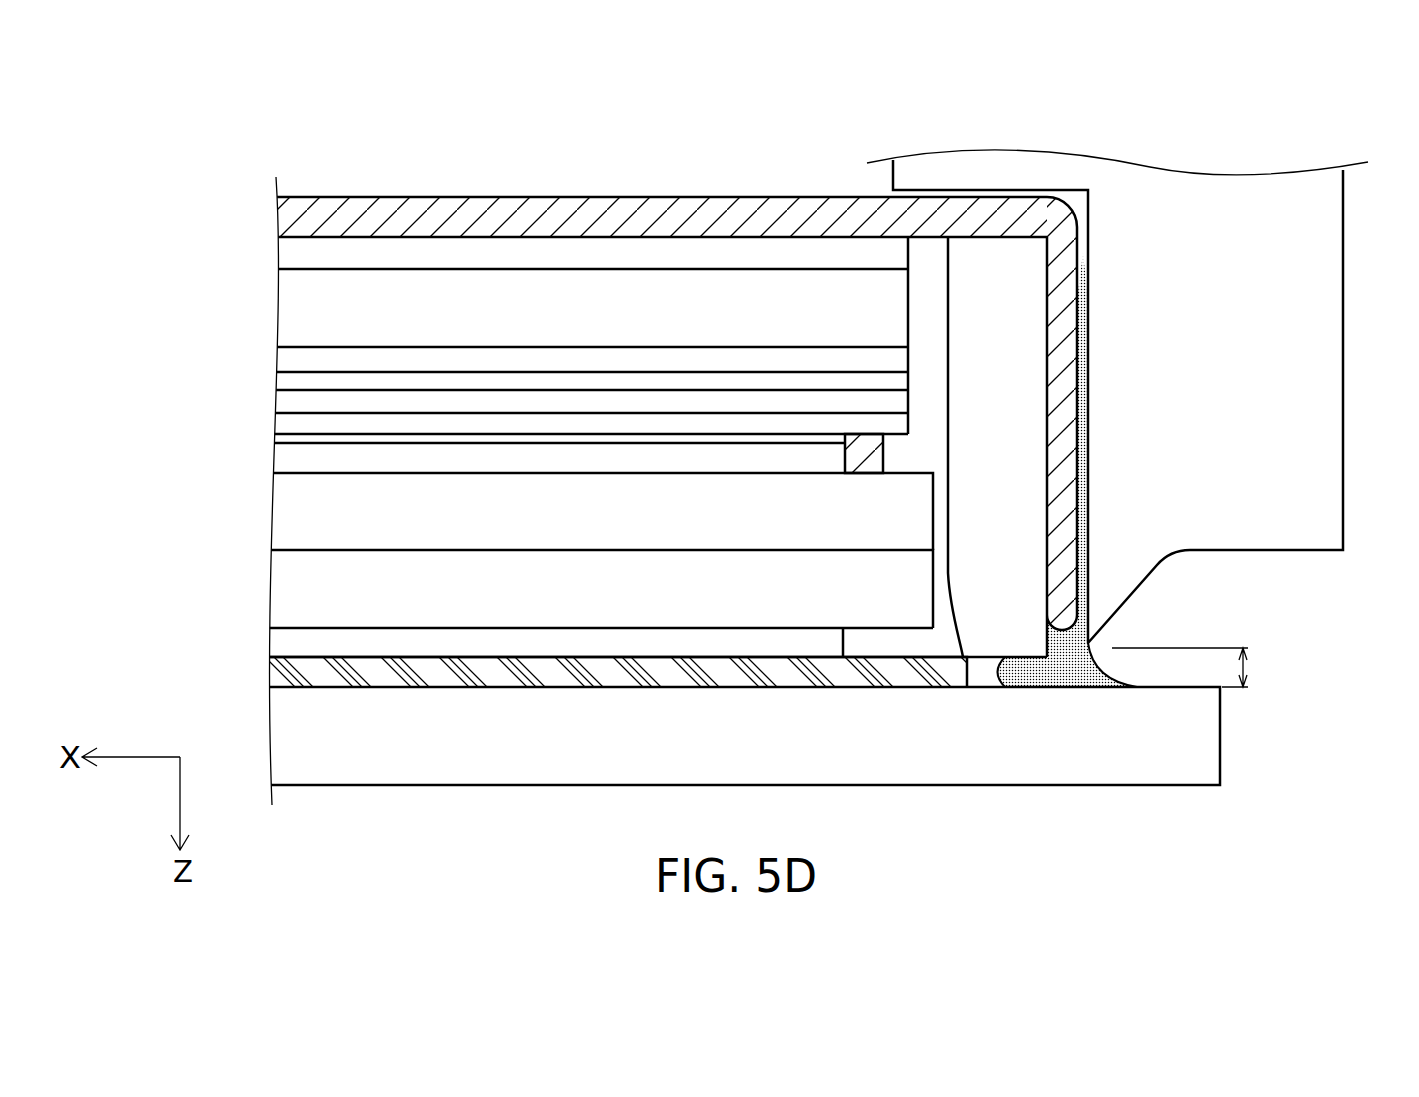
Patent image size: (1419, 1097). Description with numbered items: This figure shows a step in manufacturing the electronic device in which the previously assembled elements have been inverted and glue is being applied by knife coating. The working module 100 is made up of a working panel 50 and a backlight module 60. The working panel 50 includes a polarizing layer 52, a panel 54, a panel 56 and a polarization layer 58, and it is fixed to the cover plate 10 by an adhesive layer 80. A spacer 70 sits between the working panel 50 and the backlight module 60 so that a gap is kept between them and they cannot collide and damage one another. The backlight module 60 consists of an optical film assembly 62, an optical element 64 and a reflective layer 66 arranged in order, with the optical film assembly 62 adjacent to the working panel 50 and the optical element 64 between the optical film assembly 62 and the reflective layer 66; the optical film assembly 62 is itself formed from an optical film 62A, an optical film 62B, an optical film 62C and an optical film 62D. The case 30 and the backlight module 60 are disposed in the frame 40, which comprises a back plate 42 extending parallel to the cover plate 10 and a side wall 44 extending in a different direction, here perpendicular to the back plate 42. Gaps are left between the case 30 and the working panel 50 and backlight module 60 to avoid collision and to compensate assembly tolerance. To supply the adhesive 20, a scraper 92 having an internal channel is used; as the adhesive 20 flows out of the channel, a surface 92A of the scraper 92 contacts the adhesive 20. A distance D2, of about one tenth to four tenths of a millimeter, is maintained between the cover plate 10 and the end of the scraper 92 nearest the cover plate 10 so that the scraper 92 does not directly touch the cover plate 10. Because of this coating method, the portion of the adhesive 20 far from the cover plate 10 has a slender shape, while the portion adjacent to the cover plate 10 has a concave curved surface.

The cover plate 10 is at (300, 740).
The adhesive 20 is at (1075, 690).
The case 30 is at (989, 606).
The frame 40 is at (857, 148).
The back plate 42 is at (705, 217).
The side wall 44 is at (1060, 296).
The working panel 50 is at (156, 449).
The polarizing layer 52 is at (318, 632).
The panel 54 is at (320, 583).
The panel 56 is at (318, 510).
The polarization layer 58 is at (318, 458).
The backlight module 60 is at (156, 240).
The optical film assembly 62 is at (201, 335).
The optical film 62A is at (307, 424).
The optical film 62B is at (312, 402).
The optical film 62C is at (312, 380).
The optical film 62D is at (312, 355).
The optical element 64 is at (322, 304).
The reflective layer 66 is at (322, 251).
The spacer 70 is at (858, 448).
The adhesive layer 80 is at (318, 660).
The scraper 92 is at (1287, 375).
The surface of the scraper 92A is at (1103, 468).
The working module 100 is at (109, 305).
The distance D2 is at (1202, 667).